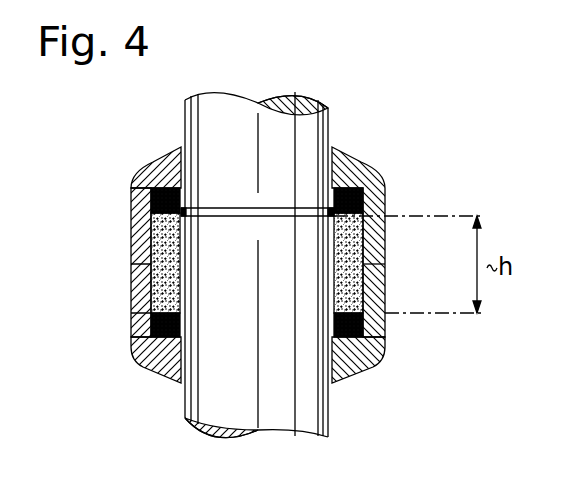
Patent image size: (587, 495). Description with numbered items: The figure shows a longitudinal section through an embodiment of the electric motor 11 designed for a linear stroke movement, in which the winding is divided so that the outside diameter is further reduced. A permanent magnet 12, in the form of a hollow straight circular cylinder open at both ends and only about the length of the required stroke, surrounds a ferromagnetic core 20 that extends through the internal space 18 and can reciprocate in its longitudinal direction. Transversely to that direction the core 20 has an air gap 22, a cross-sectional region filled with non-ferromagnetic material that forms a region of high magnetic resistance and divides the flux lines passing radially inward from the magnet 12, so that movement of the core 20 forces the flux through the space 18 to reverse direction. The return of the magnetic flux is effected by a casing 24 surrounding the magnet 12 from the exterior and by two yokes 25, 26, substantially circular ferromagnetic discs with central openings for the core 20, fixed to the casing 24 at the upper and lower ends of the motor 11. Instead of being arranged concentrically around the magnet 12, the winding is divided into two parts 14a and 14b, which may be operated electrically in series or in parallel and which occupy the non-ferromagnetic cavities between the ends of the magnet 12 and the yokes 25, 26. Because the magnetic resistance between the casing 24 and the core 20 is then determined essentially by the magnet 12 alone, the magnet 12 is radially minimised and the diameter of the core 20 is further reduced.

The electric motor 11 is at (392, 153).
The permanent magnet 12 is at (147, 238).
The winding part 14a is at (150, 193).
The winding part 14b is at (149, 331).
The internal space 18 is at (366, 323).
The core 20 is at (318, 135).
The air gap 22 is at (336, 214).
The casing 24 is at (138, 288).
The yoke 25 is at (165, 172).
The yoke 26 is at (163, 349).